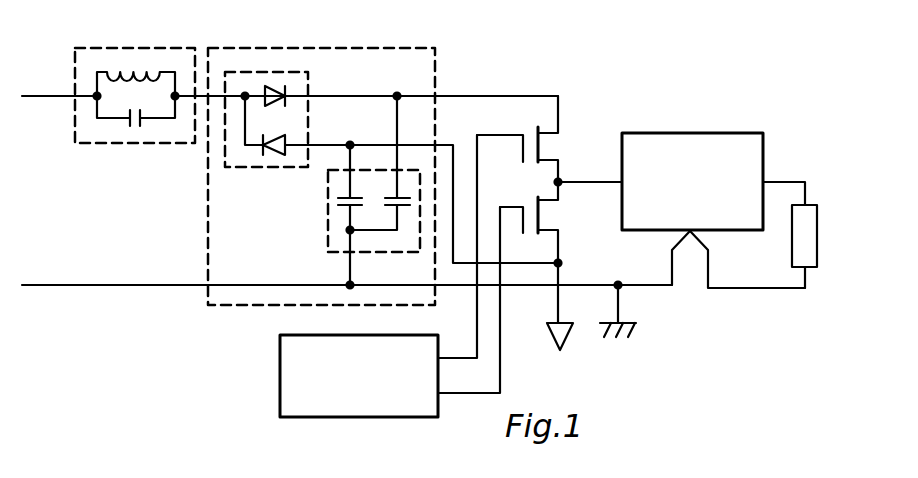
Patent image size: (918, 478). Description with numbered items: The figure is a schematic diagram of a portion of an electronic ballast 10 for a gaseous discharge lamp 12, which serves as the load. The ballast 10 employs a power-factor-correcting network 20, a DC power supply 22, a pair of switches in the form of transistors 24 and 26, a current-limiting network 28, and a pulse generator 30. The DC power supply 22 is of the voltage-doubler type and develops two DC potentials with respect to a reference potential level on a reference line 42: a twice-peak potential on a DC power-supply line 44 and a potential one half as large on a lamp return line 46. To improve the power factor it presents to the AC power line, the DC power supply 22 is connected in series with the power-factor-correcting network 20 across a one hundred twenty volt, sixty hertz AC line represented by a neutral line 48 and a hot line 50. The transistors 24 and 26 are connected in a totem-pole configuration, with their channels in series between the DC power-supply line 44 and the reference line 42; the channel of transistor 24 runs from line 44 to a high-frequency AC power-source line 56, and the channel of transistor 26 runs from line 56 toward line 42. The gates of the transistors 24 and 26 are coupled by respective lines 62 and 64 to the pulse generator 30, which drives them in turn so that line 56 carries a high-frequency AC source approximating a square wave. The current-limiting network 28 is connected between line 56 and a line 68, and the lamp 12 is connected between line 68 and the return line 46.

The ballast 10 is at (548, 352).
The gaseous discharge lamp 12 is at (817, 241).
The power-factor-correcting network 20 is at (122, 144).
The DC power supply 22 is at (208, 199).
The switch (transistor) 24 is at (548, 150).
The switch (transistor) 26 is at (548, 220).
The current-limiting network 28 is at (713, 133).
The pulse generator 30 is at (280, 372).
The reference line 42 is at (560, 243).
The DC power-supply line 44 is at (560, 104).
The lamp return line 46 is at (640, 287).
The neutral line 48 is at (33, 283).
The hot line 50 is at (24, 97).
The high-frequency AC power-source line 56 is at (609, 182).
The line 62 is at (477, 330).
The line 64 is at (500, 330).
The line 68 is at (782, 182).